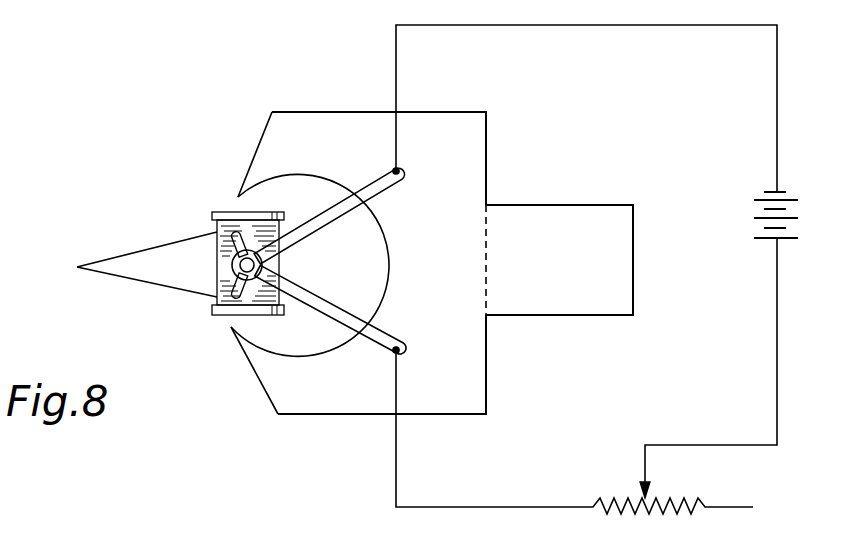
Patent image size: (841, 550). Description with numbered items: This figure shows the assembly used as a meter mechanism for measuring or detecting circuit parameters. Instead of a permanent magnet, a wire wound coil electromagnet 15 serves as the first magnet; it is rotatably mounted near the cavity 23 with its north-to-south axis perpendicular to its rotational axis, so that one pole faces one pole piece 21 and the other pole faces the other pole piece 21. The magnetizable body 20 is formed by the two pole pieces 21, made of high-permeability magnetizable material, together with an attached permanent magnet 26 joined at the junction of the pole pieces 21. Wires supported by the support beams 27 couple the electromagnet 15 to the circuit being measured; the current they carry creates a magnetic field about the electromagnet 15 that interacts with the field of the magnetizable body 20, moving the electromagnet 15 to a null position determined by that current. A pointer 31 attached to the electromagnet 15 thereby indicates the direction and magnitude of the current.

The electromagnet 15 is at (220, 316).
The magnetizable body 20 is at (497, 144).
The pole pieces 21 is at (282, 112).
The cavity 23 is at (296, 192).
The permanent magnet 26 is at (598, 205).
The support beams 27 is at (341, 192).
The pointer 31 is at (80, 268).